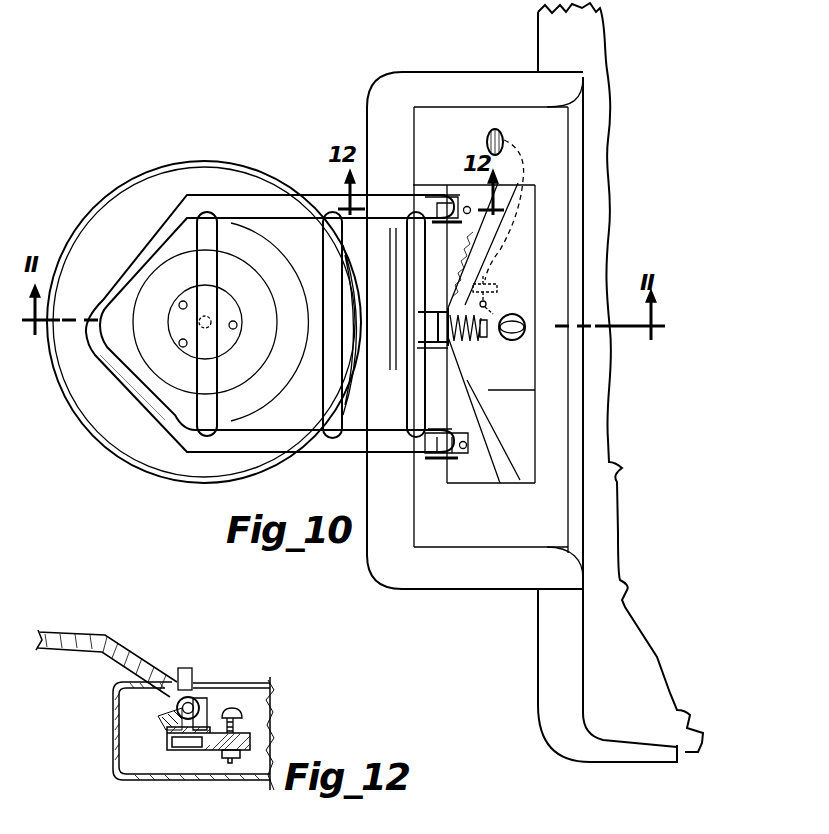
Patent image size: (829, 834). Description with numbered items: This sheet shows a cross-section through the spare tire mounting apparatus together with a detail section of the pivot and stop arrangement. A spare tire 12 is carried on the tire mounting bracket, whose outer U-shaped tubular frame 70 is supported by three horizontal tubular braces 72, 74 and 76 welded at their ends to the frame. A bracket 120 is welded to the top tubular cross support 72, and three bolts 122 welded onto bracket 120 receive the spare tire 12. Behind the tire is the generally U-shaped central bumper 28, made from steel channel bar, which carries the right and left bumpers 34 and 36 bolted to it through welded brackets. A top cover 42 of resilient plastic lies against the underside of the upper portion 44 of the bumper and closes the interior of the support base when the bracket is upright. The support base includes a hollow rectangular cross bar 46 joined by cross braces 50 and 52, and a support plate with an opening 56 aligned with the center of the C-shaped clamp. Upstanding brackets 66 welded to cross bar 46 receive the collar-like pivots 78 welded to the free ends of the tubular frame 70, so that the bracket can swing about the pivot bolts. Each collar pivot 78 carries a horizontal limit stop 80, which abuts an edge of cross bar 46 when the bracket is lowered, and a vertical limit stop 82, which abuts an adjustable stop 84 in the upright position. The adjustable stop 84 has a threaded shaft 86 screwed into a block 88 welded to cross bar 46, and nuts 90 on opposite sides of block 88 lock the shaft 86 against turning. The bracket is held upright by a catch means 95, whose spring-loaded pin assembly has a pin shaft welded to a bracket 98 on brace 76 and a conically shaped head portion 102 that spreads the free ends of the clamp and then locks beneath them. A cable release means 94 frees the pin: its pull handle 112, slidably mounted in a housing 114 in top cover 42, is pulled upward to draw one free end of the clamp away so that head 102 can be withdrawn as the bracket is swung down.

In FIG. 10, the spare tire 12 is at (118, 215).
In FIG. 10, the central bumper 28 is at (380, 588).
In FIG. 10, the right bumper 34 is at (538, 700).
In FIG. 10, the left bumper 36 is at (543, 33).
In FIG. 10, the top cover 42 is at (560, 470).
In FIG. 10, the upper portion 44 is at (490, 580).
In FIG. 12, the cross bar 46 is at (168, 752).
In FIG. 10, the cross brace 50 is at (520, 437).
In FIG. 10, the cross brace 52 is at (533, 223).
In FIG. 10, the opening 56 is at (530, 345).
In FIG. 10, the upstanding brackets 66 is at (445, 187).
In FIG. 10, the outer U-shaped tubular frame 70 is at (172, 470).
In FIG. 12, the outer U-shaped tubular frame 70 is at (128, 630).
In FIG. 10, the horizontal tubular brace 72 is at (212, 230).
In FIG. 10, the horizontal tubular brace 74 is at (330, 233).
In FIG. 10, the horizontal tubular brace 76 is at (415, 413).
In FIG. 12, the collar-like pivot 78 is at (200, 700).
In FIG. 12, the horizontal limit stop 80 is at (160, 720).
In FIG. 12, the vertical limit stop 82 is at (187, 666).
In FIG. 12, the adjustable stop 84 is at (223, 727).
In FIG. 12, the threaded shaft 86 is at (246, 736).
In FIG. 12, the block 88 is at (242, 745).
In FIG. 12, the nuts 90 is at (240, 753).
In FIG. 10, the cable release means 94 is at (510, 245).
In FIG. 10, the catch means 95 is at (467, 348).
In FIG. 10, the bracket 98 is at (473, 383).
In FIG. 10, the conically shaped head portion 102 is at (495, 305).
In FIG. 10, the pull handle 112 is at (493, 130).
In FIG. 10, the housing 114 is at (500, 133).
In FIG. 10, the bracket 120 is at (229, 347).
In FIG. 10, the bolts 122 is at (181, 340).